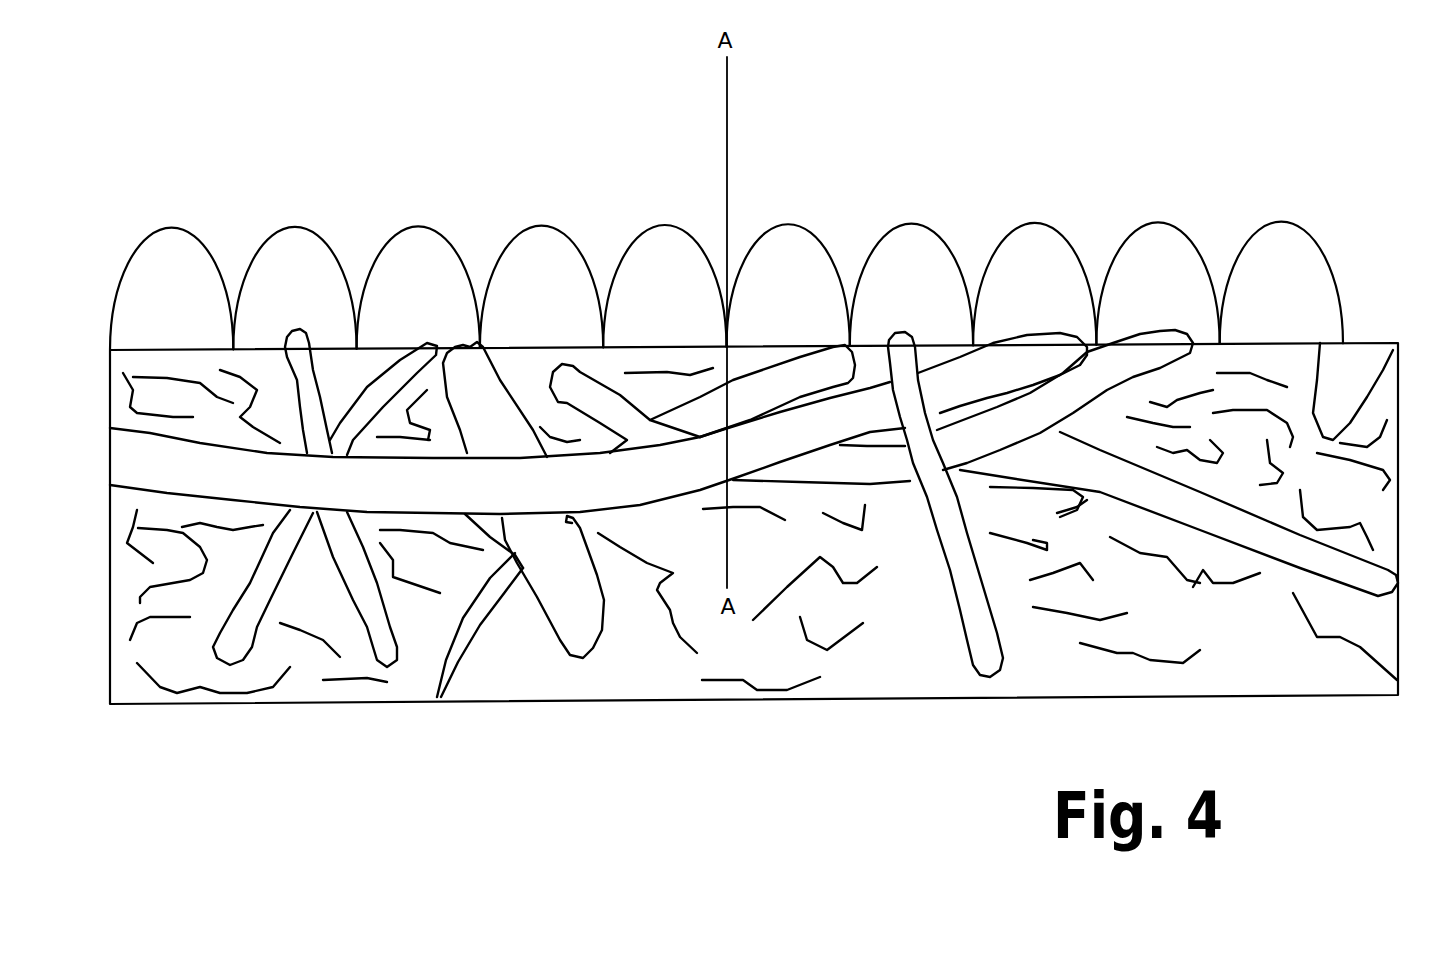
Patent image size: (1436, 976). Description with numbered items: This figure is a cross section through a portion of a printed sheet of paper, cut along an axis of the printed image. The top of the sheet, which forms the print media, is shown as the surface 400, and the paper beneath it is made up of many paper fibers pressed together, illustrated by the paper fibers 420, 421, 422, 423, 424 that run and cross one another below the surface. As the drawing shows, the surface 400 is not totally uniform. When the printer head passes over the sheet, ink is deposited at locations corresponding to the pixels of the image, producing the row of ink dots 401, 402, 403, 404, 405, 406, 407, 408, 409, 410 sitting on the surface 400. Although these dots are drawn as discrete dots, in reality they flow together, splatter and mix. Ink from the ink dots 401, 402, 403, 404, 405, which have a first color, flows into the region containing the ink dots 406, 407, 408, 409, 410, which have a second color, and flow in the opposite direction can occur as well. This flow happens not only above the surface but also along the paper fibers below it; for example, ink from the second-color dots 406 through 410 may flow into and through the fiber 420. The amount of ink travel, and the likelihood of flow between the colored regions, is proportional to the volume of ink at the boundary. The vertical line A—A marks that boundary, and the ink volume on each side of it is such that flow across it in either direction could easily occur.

The surface 400 is at (1370, 342).
The ink dot 401 is at (168, 247).
The ink dot 402 is at (292, 246).
The ink dot 403 is at (416, 245).
The ink dot 404 is at (540, 245).
The ink dot 405 is at (663, 244).
The ink dot 406 is at (786, 243).
The ink dot 407 is at (909, 243).
The ink dot 408 is at (1033, 242).
The ink dot 409 is at (1156, 241).
The ink dot 410 is at (1280, 240).
The paper fiber 420 is at (500, 557).
The paper fiber 421 is at (575, 603).
The paper fiber 422 is at (885, 502).
The paper fiber 423 is at (980, 625).
The paper fiber 424 is at (1232, 587).